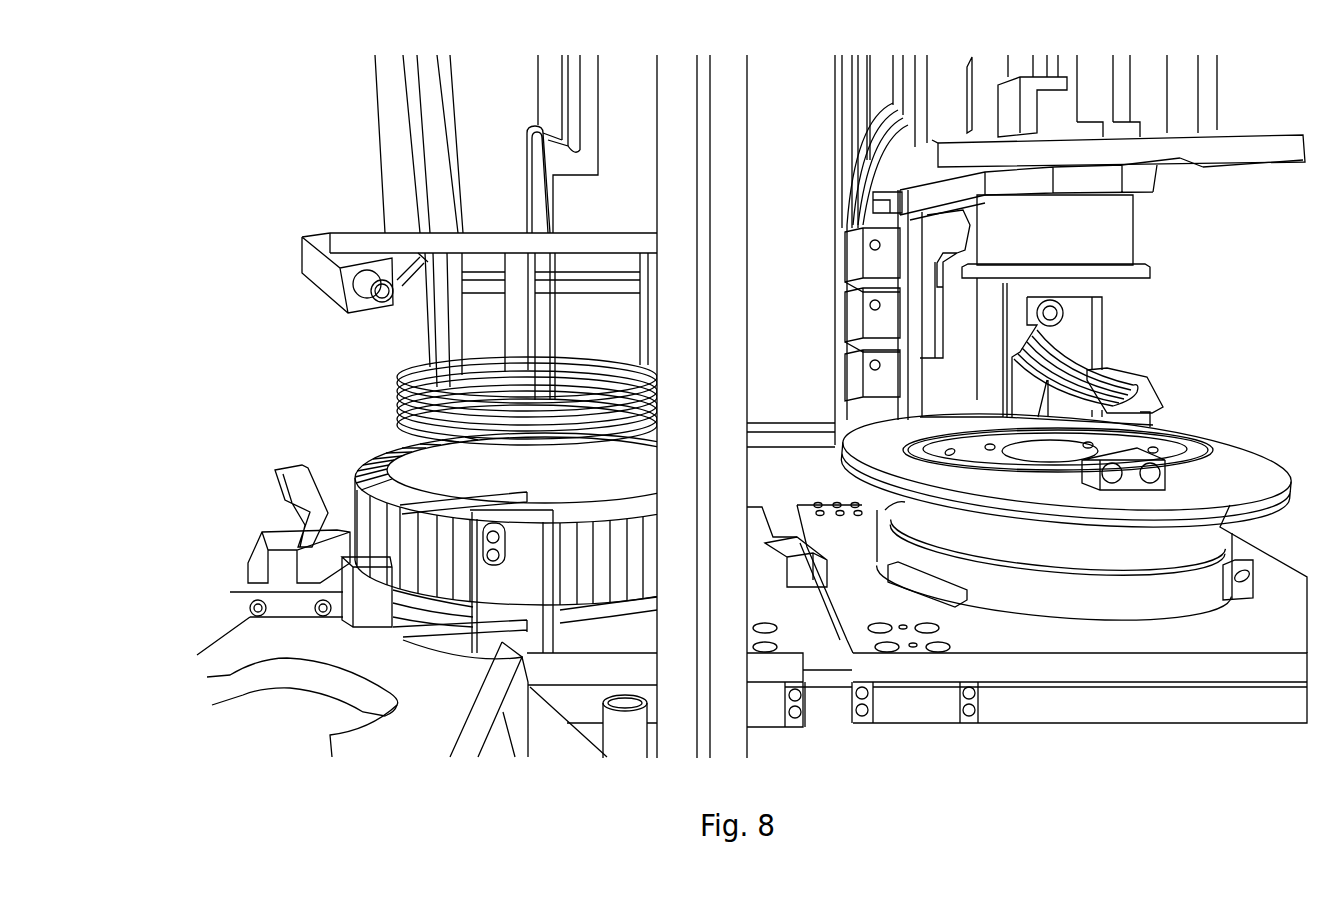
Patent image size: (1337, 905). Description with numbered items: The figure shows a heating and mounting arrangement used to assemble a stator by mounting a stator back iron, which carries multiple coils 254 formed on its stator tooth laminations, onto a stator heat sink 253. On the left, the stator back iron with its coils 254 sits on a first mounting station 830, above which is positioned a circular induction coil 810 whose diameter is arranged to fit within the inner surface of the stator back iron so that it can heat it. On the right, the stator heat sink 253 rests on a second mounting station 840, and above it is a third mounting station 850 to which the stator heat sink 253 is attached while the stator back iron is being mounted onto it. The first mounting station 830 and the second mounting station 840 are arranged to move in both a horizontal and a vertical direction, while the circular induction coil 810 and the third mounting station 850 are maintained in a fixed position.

The circular induction coil 810 is at (397, 398).
The coils 254 is at (362, 482).
The first mounting station 830 is at (570, 670).
The third mounting station 850 is at (892, 170).
The stator heat sink 253 is at (1203, 445).
The second mounting station 840 is at (900, 668).